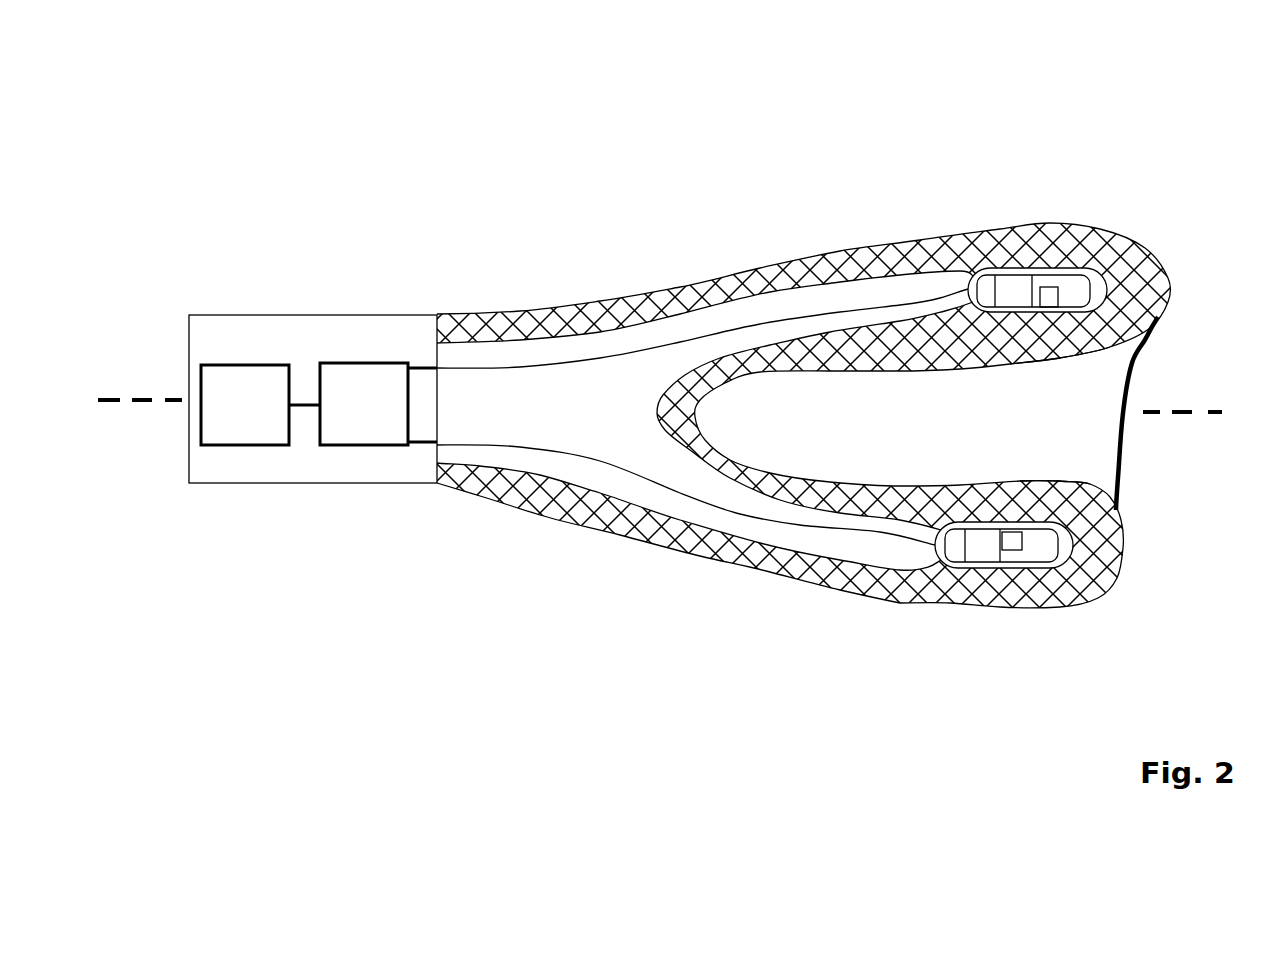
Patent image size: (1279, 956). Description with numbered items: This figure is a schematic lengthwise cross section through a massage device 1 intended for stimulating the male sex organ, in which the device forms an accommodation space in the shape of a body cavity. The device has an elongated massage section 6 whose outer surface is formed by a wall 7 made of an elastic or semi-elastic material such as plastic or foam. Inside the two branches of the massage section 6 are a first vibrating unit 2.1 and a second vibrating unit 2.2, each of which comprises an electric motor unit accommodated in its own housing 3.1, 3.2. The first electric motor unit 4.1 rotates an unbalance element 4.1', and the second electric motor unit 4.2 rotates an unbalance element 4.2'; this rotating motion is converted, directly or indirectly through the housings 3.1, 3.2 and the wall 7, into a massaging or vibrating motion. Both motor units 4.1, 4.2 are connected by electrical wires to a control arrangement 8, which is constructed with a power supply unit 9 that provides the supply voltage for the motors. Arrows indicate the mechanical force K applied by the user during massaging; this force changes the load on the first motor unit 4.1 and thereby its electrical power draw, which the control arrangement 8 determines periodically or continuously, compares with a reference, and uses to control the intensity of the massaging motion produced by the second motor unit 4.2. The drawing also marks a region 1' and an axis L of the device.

The massage device 1 is at (680, 335).
The gripped object contour 1' is at (1177, 494).
The first vibrating unit 2.1 is at (1062, 212).
The second vibrating unit 2.2 is at (927, 620).
The housing 3.1 is at (1093, 280).
The housing 3.2 is at (1065, 560).
The first electric motor unit 4.1 is at (1037, 206).
The unbalance element 4.1' is at (1031, 175).
The second electric motor unit 4.2 is at (995, 645).
The unbalance element 4.2' is at (1030, 654).
The massage section 6 is at (915, 470).
The wall 7 is at (1067, 350).
The control arrangement 8 is at (363, 404).
The power supply unit 9 is at (245, 405).
The mechanical force K is at (1004, 465).
The longitudinal axis L is at (676, 389).